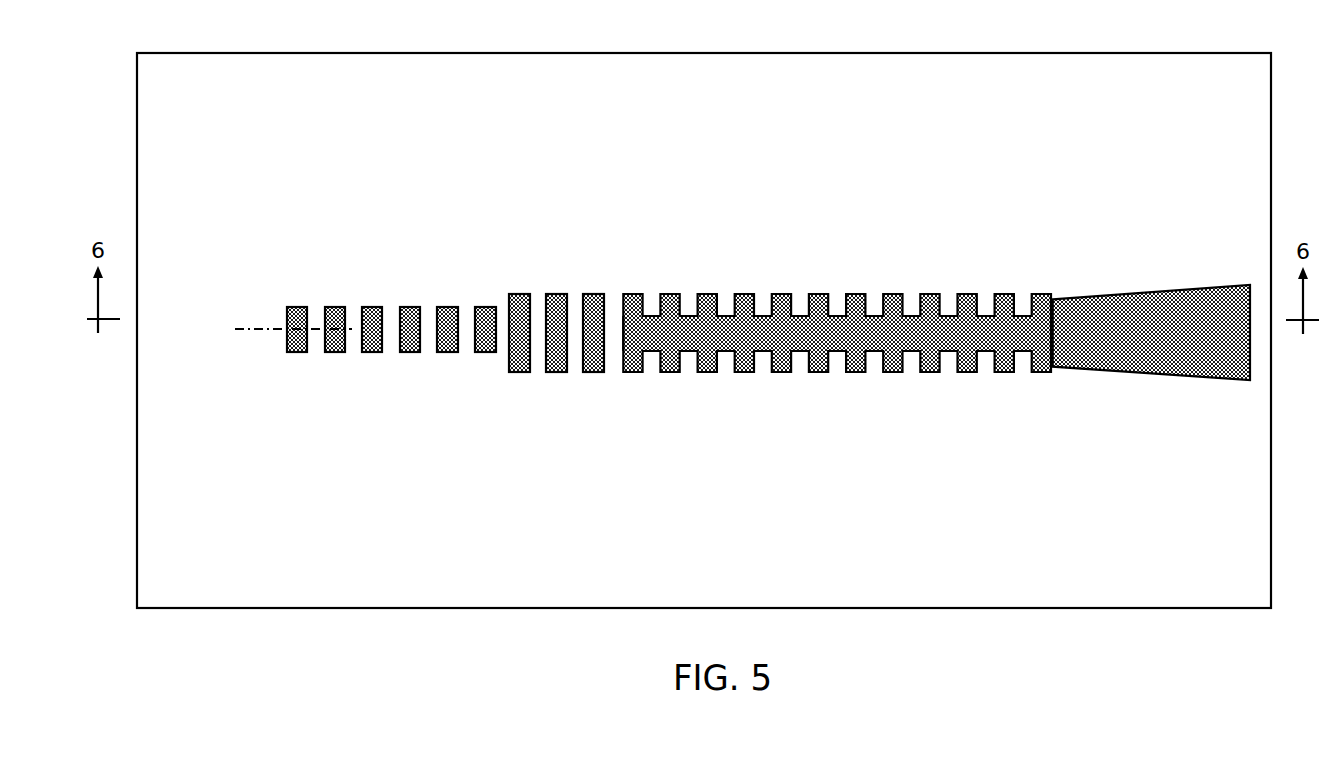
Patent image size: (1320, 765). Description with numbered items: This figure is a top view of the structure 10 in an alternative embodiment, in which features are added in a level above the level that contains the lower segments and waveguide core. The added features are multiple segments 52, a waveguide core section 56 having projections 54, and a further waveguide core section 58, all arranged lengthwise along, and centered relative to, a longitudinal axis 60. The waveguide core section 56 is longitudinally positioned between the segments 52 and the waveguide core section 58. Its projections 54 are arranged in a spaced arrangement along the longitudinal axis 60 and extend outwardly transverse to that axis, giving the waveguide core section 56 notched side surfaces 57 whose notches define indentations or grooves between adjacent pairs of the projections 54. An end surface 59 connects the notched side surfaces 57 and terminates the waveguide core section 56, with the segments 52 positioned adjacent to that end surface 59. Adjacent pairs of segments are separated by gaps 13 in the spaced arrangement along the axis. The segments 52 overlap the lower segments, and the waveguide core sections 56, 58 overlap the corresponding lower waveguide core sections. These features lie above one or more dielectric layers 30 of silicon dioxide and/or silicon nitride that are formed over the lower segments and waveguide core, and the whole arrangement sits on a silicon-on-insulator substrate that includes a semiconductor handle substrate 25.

The structure 10 is at (260, 150).
The gaps 13 is at (433, 333).
The handle substrate 25 is at (447, 327).
The dielectric layers 30 is at (704, 330).
The segments 52 is at (338, 340).
The projections 54 is at (669, 304).
The waveguide core section 56 is at (810, 335).
The notched side surfaces 57 is at (856, 302).
The waveguide core section 58 is at (1129, 328).
The end surface 59 is at (628, 346).
The longitudinal axis 60 is at (271, 328).